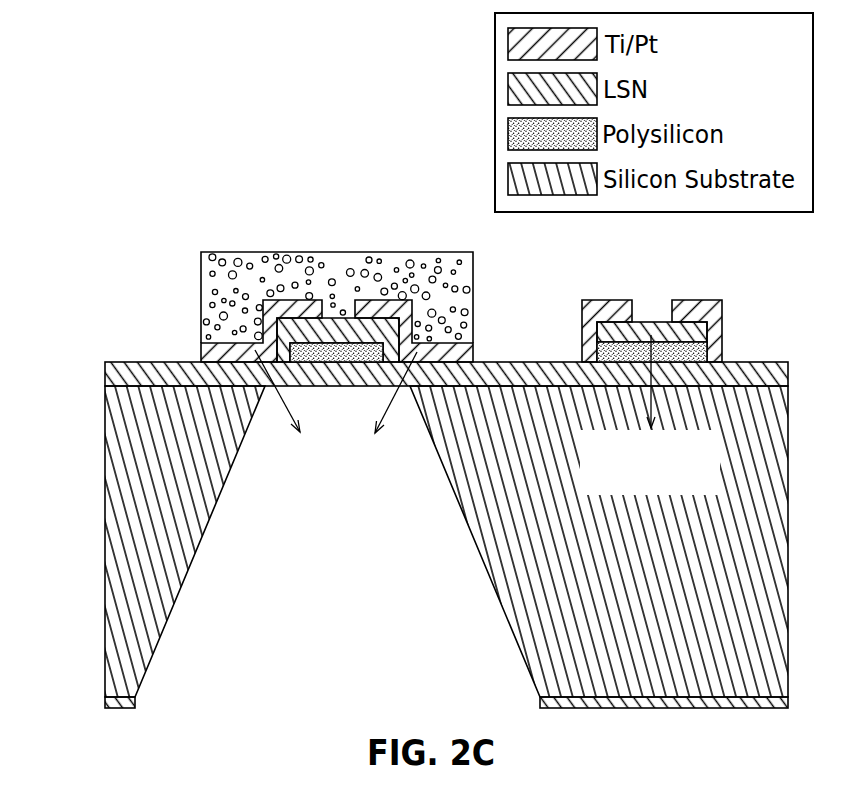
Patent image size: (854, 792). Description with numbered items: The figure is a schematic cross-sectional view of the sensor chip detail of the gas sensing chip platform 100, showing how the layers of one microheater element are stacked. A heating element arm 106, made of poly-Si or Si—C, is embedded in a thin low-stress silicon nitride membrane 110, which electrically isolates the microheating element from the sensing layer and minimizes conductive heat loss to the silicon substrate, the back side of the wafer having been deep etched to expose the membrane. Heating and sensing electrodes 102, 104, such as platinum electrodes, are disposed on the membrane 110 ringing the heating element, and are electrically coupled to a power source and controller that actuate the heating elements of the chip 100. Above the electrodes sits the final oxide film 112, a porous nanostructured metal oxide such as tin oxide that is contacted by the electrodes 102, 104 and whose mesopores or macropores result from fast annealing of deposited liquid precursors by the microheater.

The gas sensing chip platform 100 is at (402, 418).
The heating and sensing electrode 102 is at (202, 350).
The heating and sensing electrode 104 is at (470, 352).
The heating element arm 106 is at (305, 355).
The low-stress silicon nitride membrane 110 is at (127, 367).
The oxide film 112 is at (347, 252).